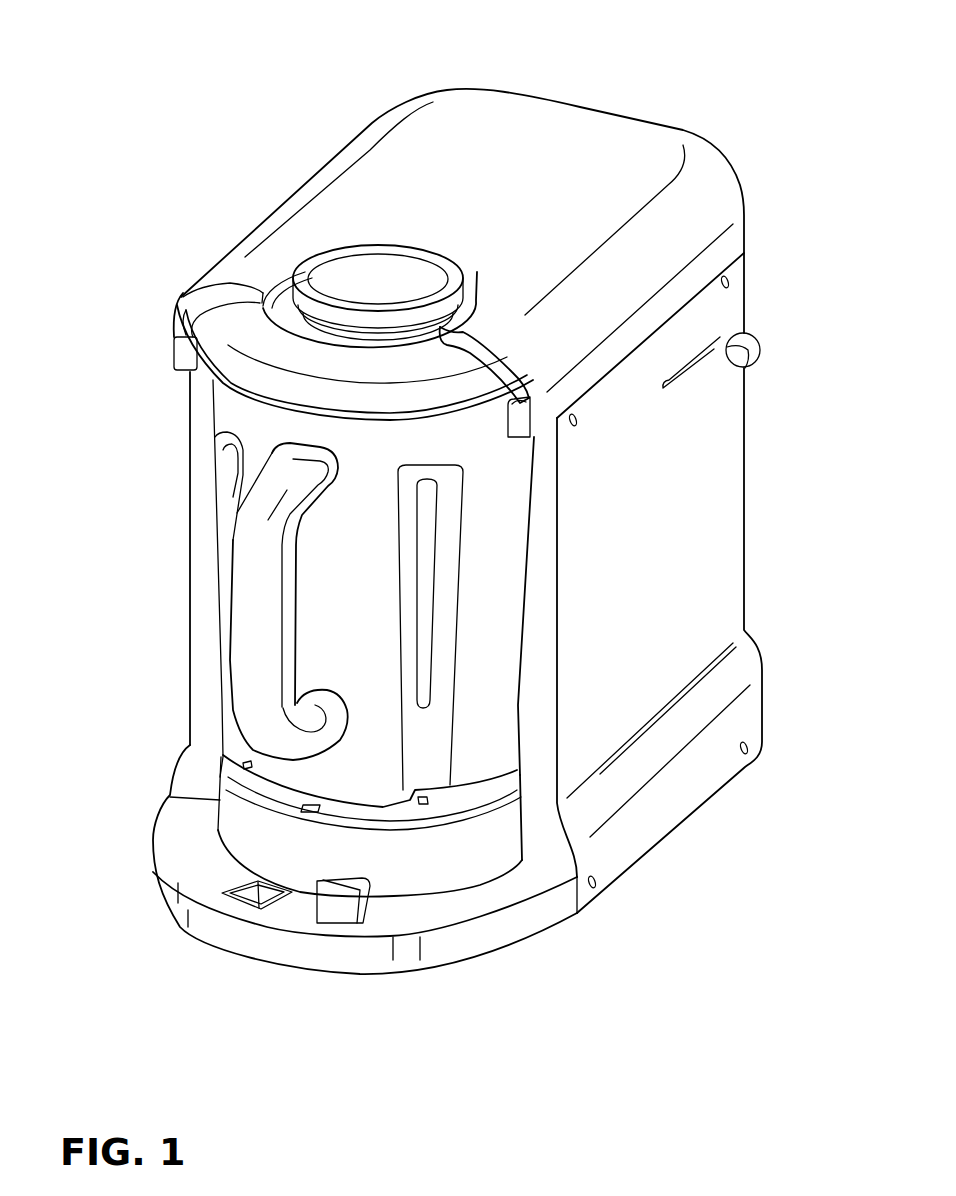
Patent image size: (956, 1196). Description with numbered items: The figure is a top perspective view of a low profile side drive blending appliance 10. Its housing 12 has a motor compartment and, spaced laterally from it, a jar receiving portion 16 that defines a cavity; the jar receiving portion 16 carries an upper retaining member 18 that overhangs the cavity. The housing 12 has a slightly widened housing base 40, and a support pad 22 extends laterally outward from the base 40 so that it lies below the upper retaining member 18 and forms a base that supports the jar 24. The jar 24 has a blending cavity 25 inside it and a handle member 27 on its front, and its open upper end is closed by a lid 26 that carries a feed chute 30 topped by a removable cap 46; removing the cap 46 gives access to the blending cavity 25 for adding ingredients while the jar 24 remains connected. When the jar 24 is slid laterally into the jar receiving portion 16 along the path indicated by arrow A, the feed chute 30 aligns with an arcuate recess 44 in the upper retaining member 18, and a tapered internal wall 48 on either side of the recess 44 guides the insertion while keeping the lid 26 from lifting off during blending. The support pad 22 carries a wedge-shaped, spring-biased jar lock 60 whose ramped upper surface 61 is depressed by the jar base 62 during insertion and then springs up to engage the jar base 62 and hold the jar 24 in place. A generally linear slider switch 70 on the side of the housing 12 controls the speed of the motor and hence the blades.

The blending appliance 10 is at (134, 488).
The housing 12 is at (625, 482).
The jar receiving portion 16 is at (518, 705).
The upper retaining member 18 is at (238, 268).
The support pad 22 is at (547, 920).
The jar 24 is at (311, 556).
The blending cavity 25 is at (338, 607).
The lid 26 is at (176, 371).
The handle member 27 is at (245, 565).
The feed chute 30 is at (410, 358).
The housing base 40 is at (710, 755).
The arcuate recess 44 is at (473, 273).
The removable cap 46 is at (373, 273).
The tapered internal wall 48 is at (195, 334).
The jar lock 60 is at (353, 892).
The ramped upper surface 61 is at (343, 950).
The jar base 62 is at (450, 863).
The slider switch 70 is at (745, 337).